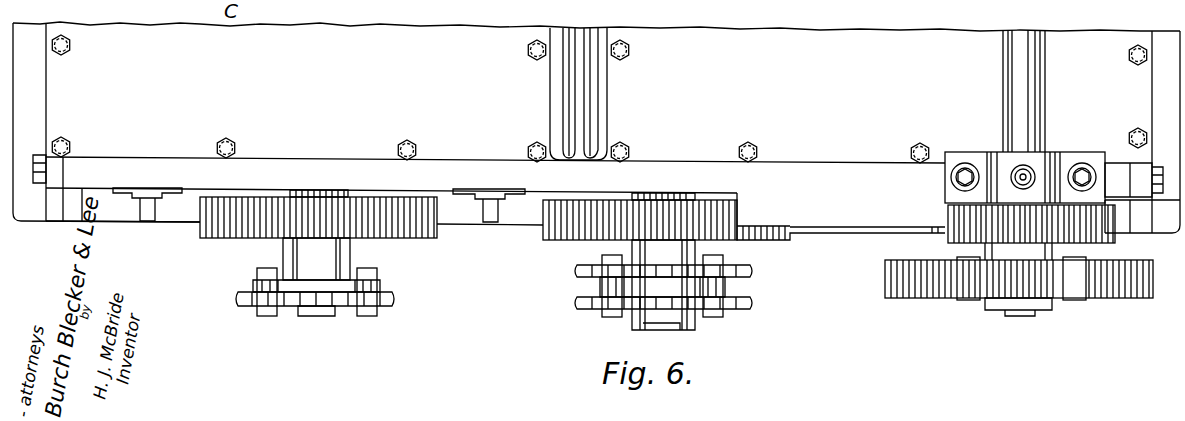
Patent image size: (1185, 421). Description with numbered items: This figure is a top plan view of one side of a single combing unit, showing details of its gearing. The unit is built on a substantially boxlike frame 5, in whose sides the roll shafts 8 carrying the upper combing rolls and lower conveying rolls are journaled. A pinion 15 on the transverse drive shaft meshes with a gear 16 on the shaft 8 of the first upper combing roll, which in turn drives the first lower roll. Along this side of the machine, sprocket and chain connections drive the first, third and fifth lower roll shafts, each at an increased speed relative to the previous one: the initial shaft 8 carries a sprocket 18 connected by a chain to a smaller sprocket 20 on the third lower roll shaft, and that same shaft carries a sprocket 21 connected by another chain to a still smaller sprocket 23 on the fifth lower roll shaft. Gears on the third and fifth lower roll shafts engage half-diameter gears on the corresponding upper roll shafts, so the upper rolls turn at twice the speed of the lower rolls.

The frame 5 is at (585, 103).
The shaft 8 is at (1012, 96).
The pinion 15 is at (1035, 200).
The gear 16 is at (930, 238).
The sprocket 18 is at (922, 292).
The sprocket 20 is at (583, 268).
The sprocket 21 is at (587, 307).
The sprocket 23 is at (245, 305).